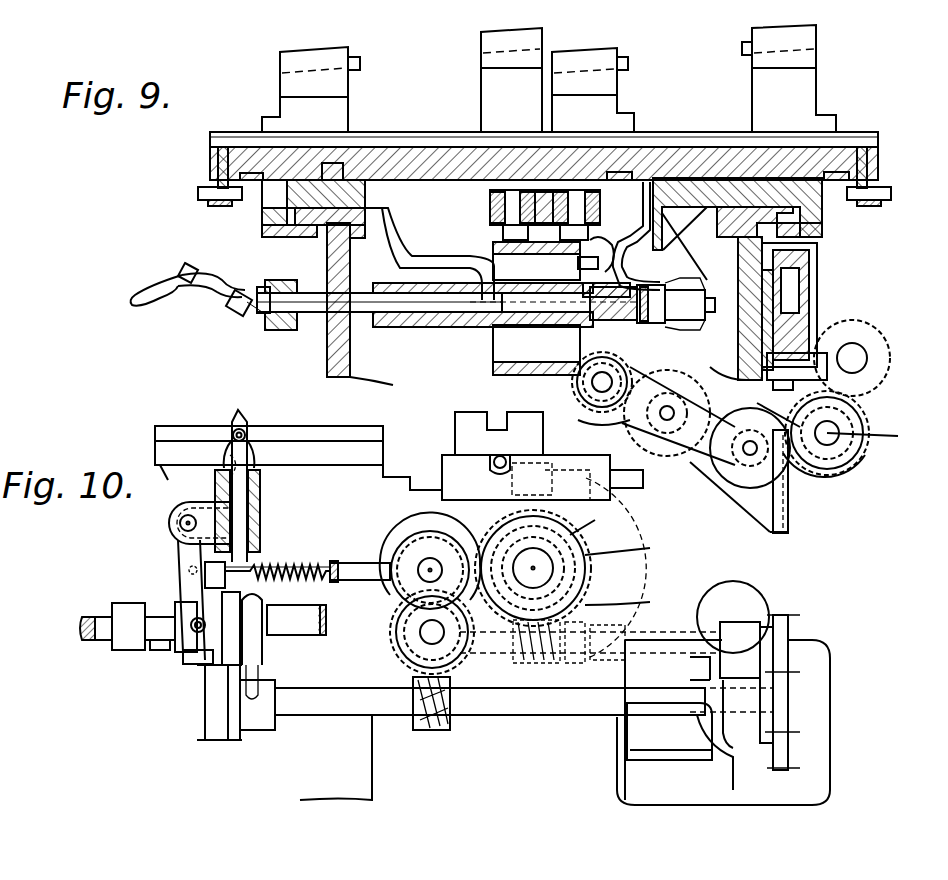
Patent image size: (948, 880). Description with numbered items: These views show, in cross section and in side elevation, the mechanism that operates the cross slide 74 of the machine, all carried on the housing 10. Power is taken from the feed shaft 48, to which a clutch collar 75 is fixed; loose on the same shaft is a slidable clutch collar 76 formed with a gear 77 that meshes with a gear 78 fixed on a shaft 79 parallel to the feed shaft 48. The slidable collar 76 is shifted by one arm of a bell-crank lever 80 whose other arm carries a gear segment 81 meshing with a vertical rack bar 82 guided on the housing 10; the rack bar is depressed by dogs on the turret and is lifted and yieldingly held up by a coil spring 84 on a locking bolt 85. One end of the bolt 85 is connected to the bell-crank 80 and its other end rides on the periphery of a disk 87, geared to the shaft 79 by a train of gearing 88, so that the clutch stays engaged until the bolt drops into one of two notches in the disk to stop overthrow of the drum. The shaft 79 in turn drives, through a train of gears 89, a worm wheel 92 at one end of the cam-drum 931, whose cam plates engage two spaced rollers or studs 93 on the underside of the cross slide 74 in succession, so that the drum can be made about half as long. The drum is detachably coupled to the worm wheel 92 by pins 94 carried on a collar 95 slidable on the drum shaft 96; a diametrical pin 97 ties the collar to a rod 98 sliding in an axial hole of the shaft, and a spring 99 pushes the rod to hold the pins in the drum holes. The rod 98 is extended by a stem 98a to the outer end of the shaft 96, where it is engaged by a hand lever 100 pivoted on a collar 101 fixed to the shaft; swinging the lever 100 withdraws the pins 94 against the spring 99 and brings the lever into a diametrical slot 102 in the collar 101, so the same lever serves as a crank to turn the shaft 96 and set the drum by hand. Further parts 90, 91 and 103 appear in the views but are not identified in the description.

In FIG. 9, the housing 10 is at (752, 337).
In FIG. 9, the feed shaft 48 is at (852, 358).
In FIG. 10, the feed shaft 48 is at (98, 640).
In FIG. 9, the cross slide 74 is at (544, 115).
In FIG. 10, the cross slide 74 is at (399, 456).
In FIG. 10, the clutch collar 75 is at (125, 603).
In FIG. 10, the slidable clutch collar 76 is at (190, 655).
In FIG. 10, the gear 77 is at (230, 655).
In FIG. 10, the gear 78 is at (218, 745).
In FIG. 9, the shaft 79 is at (871, 435).
In FIG. 10, the shaft 79 is at (486, 702).
In FIG. 10, the bell-crank lever 80 is at (175, 550).
In FIG. 10, the gear segment 81 is at (213, 512).
In FIG. 10, the vertical rack bar 82 is at (262, 495).
In FIG. 10, the coil spring 84 is at (290, 565).
In FIG. 10, the locking bolt 85 is at (297, 595).
In FIG. 9, the disk 87 is at (817, 270).
In FIG. 10, the disk 87 is at (410, 545).
In FIG. 9, the train of gearing 88 is at (839, 432).
In FIG. 10, the train of gearing 88 is at (411, 632).
In FIG. 10, the train of gears 89 is at (790, 690).
In FIG. 9, the gear 90 is at (600, 383).
In FIG. 9, the worm 91 is at (650, 357).
In FIG. 10, the worm 91 is at (545, 640).
In FIG. 9, the worm wheel 92 is at (643, 210).
In FIG. 10, the worm wheel 92 is at (595, 568).
In FIG. 9, the rollers or studs 93 is at (512, 225).
In FIG. 9, the cam-drum 931 is at (561, 399).
In FIG. 10, the cam-drum 931 is at (634, 548).
In FIG. 9, the pins 94 is at (578, 263).
In FIG. 10, the pins 94 is at (620, 559).
In FIG. 9, the collar 95 is at (670, 265).
In FIG. 9, the drum shaft 96 is at (312, 292).
In FIG. 9, the diametrically extending pin 97 is at (688, 283).
In FIG. 9, the rod 98 is at (420, 327).
In FIG. 9, the stem 98a is at (330, 313).
In FIG. 9, the spring 99 is at (536, 350).
In FIG. 9, the hand lever 100 is at (162, 285).
In FIG. 9, the collar 101 is at (270, 330).
In FIG. 9, the diametrical slot 102 is at (263, 287).
In FIG. 9, the clamp 103 is at (228, 300).